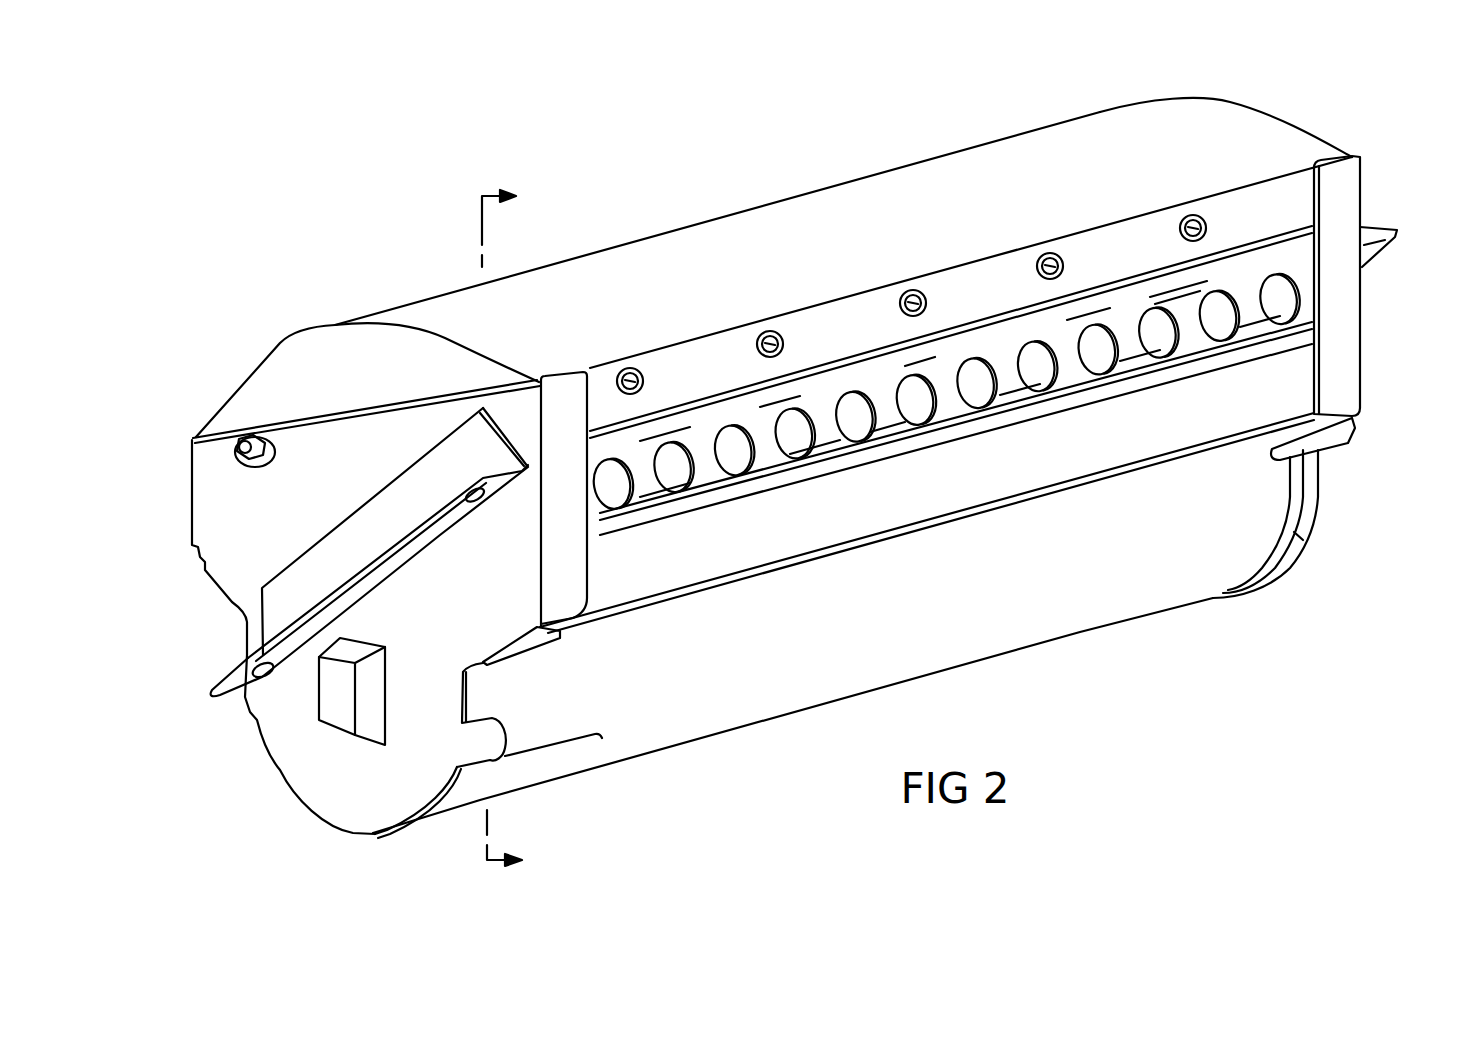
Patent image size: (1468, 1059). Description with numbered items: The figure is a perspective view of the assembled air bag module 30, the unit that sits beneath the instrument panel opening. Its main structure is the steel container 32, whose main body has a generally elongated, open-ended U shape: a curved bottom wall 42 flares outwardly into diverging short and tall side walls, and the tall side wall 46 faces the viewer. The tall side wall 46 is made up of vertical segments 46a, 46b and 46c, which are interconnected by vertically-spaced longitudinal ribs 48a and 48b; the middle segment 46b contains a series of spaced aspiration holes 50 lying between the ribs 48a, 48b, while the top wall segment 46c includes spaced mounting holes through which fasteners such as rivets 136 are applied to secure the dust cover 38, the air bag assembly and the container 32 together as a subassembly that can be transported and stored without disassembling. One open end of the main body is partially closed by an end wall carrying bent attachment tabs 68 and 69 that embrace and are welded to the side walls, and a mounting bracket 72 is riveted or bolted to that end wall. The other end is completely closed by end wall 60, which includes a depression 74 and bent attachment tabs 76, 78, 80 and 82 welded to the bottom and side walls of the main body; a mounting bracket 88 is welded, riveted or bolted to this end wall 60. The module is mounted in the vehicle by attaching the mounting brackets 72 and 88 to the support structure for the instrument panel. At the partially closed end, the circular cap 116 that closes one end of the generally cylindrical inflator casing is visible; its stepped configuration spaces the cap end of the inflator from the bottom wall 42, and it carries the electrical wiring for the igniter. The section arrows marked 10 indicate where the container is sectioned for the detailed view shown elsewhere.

The section line 10- 10 is at (526, 526).
The air bag module 30 is at (362, 295).
The steel container 32 is at (793, 715).
The dust cover 38 is at (663, 250).
The curved bottom wall 42 is at (710, 736).
The tall side wall 46 is at (905, 513).
The vertical segment 46a is at (1163, 442).
The vertical segment 46b is at (1000, 357).
The top wall segment 46c is at (1250, 198).
The longitudinal rib 48a is at (1293, 338).
The longitudinal rib 48b is at (1280, 253).
The aspiration holes 50 is at (630, 492).
The end wall 60 is at (240, 557).
The bent attachment tab 68 is at (1337, 377).
The bent attachment tab 69 is at (1340, 443).
The mounting bracket 72 is at (1391, 229).
The depression 74 is at (327, 700).
The bent attachment tab 76 is at (568, 587).
The bent attachment tab 78 is at (530, 650).
The bent attachment tab 80 is at (500, 744).
The bent attachment tab 82 is at (343, 833).
The mounting bracket 88 is at (450, 523).
The circular cap 116 is at (1300, 538).
The rivets 136 is at (630, 367).